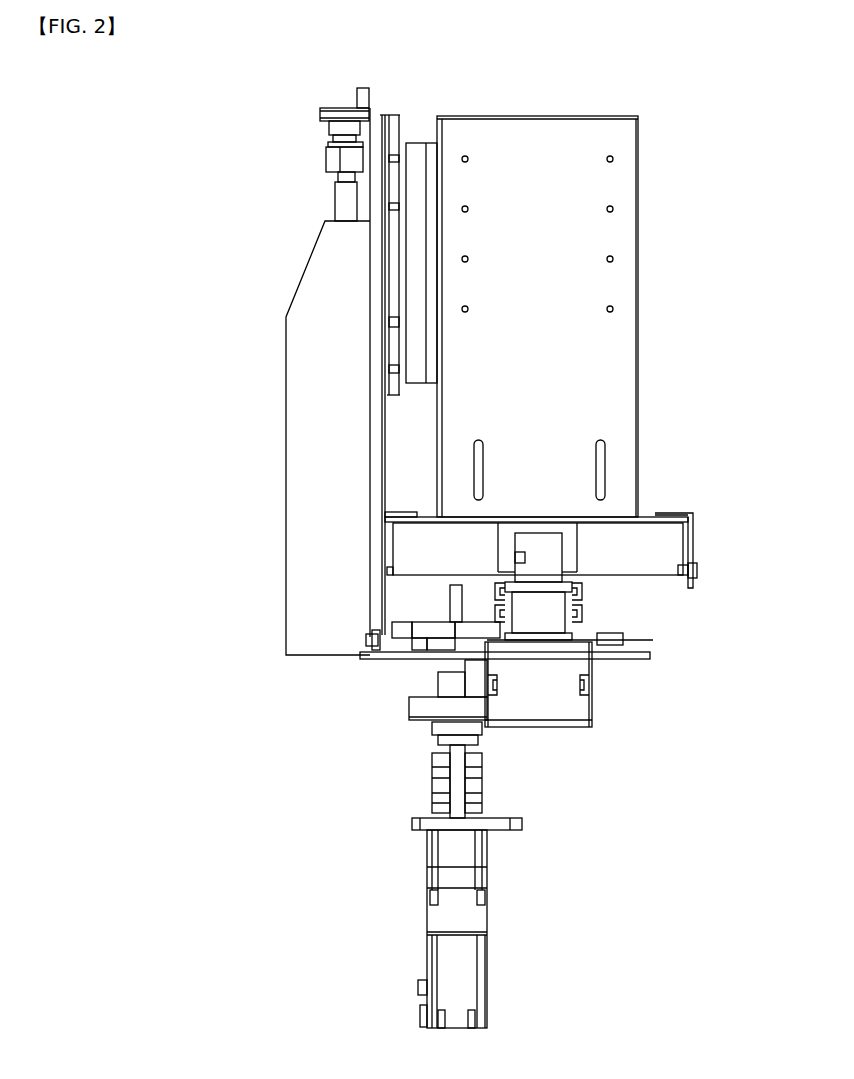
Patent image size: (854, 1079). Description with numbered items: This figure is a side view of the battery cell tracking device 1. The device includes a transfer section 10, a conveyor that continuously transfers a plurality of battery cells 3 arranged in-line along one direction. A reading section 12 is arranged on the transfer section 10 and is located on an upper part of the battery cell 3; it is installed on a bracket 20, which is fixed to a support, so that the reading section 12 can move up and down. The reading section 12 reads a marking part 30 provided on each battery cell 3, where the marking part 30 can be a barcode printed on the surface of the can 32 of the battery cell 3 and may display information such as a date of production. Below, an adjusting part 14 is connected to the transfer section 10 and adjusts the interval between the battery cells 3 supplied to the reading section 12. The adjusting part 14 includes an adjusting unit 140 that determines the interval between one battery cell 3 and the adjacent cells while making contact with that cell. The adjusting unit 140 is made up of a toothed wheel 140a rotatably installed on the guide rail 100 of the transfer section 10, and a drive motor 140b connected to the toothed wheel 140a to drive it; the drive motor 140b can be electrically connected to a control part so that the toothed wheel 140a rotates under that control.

The battery cell tracking device 1 is at (682, 161).
The reading section 12 is at (645, 275).
The bracket 20 is at (286, 525).
The battery cell 3 is at (568, 553).
The marking part 30 is at (522, 552).
The can 32 is at (550, 540).
The transfer section 10 is at (611, 687).
The guide rail 100 is at (553, 706).
The adjusting unit 140 is at (352, 733).
The toothed wheel 140a is at (403, 655).
The drive motor 140b is at (437, 785).
The adjusting part 14 is at (512, 919).